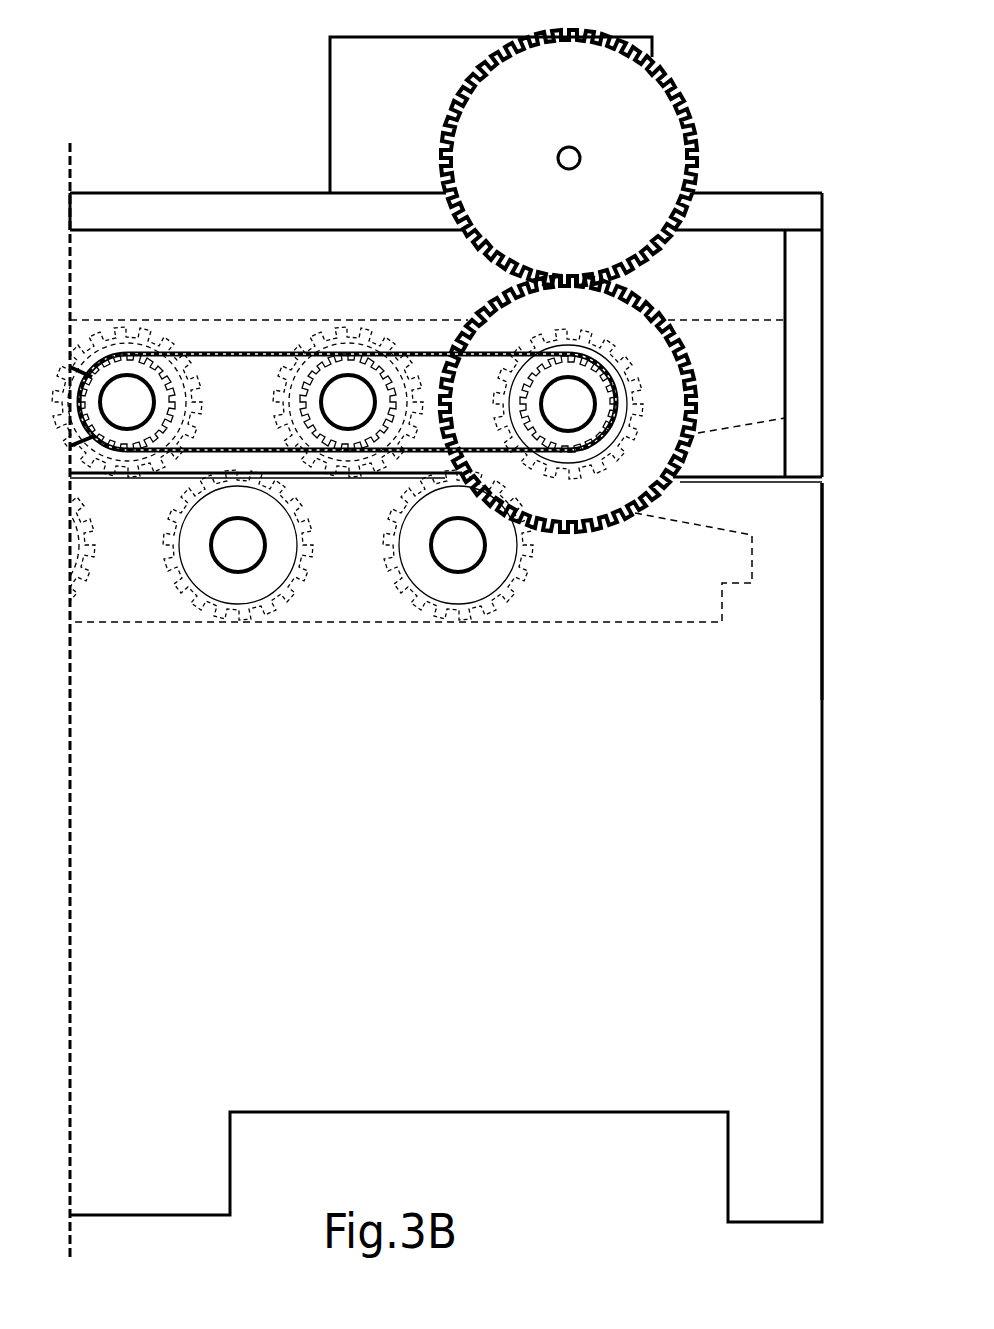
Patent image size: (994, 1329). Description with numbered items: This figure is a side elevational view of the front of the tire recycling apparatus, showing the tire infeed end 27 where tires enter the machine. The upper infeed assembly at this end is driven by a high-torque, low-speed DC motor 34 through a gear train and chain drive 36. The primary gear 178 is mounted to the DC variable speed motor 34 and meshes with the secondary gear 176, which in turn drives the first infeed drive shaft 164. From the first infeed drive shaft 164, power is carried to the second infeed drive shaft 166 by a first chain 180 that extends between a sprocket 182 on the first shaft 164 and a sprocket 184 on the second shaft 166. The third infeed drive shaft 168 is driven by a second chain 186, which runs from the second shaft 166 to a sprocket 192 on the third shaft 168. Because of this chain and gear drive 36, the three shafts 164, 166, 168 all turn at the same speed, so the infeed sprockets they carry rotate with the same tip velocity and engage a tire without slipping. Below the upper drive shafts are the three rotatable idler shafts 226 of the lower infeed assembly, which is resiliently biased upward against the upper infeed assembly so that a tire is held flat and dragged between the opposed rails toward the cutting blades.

The tire infeed end 27 is at (823, 454).
The DC motor 34 is at (330, 93).
The gear train and chain drive 36 is at (697, 155).
The first infeed drive shaft 164 is at (586, 416).
The second infeed drive shaft 166 is at (366, 415).
The third infeed drive shaft 168 is at (145, 414).
The secondary gear 176 is at (588, 507).
The primary gear 178 is at (588, 216).
The first chain 180 is at (423, 354).
The sprocket 182 is at (512, 390).
The sprocket 184 is at (390, 354).
The second chain 186 is at (221, 354).
The sprocket 192 is at (188, 388).
The idler shafts 226 is at (210, 548).